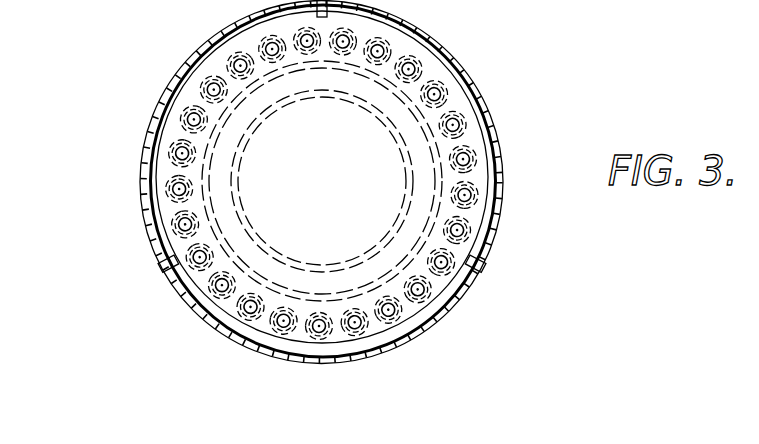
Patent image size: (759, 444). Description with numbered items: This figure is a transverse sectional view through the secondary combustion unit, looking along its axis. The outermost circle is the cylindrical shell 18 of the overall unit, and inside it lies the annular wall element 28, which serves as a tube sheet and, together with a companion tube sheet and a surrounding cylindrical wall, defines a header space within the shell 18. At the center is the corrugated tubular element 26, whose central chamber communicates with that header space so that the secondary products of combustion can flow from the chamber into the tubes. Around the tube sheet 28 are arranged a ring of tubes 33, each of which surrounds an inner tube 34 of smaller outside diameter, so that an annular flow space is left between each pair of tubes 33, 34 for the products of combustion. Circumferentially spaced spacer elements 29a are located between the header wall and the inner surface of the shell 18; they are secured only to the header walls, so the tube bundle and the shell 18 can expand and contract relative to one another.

The cylindrical shell 18 is at (498, 141).
The corrugated tubular element 26 is at (232, 173).
The wall element 28 is at (476, 208).
The spacer elements 29a is at (362, 8).
The tubes 33 is at (190, 295).
The tubes 34 is at (172, 222).